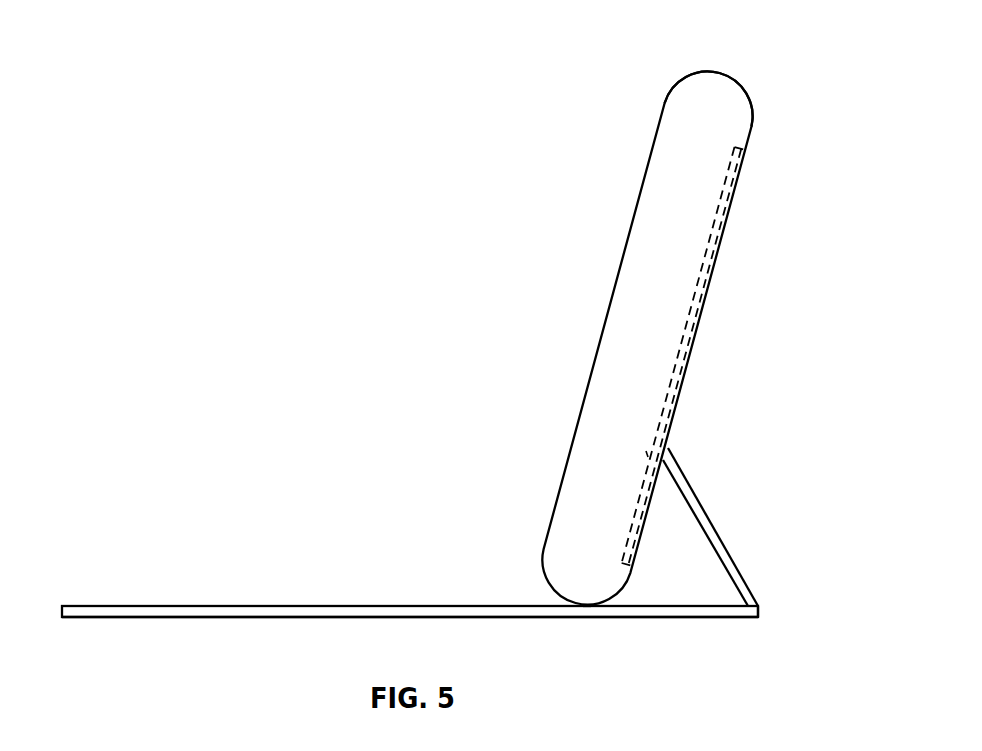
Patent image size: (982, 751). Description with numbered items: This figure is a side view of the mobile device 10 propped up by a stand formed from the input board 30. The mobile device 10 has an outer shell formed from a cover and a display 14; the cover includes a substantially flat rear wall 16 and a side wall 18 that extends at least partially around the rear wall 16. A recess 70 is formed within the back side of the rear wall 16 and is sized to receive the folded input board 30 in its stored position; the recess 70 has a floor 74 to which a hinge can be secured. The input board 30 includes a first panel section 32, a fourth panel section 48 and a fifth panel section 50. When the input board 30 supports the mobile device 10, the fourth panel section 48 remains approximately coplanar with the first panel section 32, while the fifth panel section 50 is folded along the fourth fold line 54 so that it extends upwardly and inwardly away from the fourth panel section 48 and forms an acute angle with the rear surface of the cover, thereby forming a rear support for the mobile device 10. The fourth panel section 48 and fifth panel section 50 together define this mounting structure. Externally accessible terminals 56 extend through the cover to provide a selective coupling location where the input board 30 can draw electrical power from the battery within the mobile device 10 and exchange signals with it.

The mobile device 10 is at (691, 309).
The display 14 is at (615, 285).
The rear wall 16 is at (743, 92).
The side wall 18 is at (692, 146).
The recess 70 is at (740, 205).
The floor 74 is at (648, 457).
The input board 30 is at (451, 561).
The first panel section 32 is at (192, 606).
The fifth panel section 50 is at (715, 527).
The fourth panel section 48 is at (665, 618).
The fourth fold line 54 is at (758, 611).
The externally accessible terminals 56 is at (586, 608).